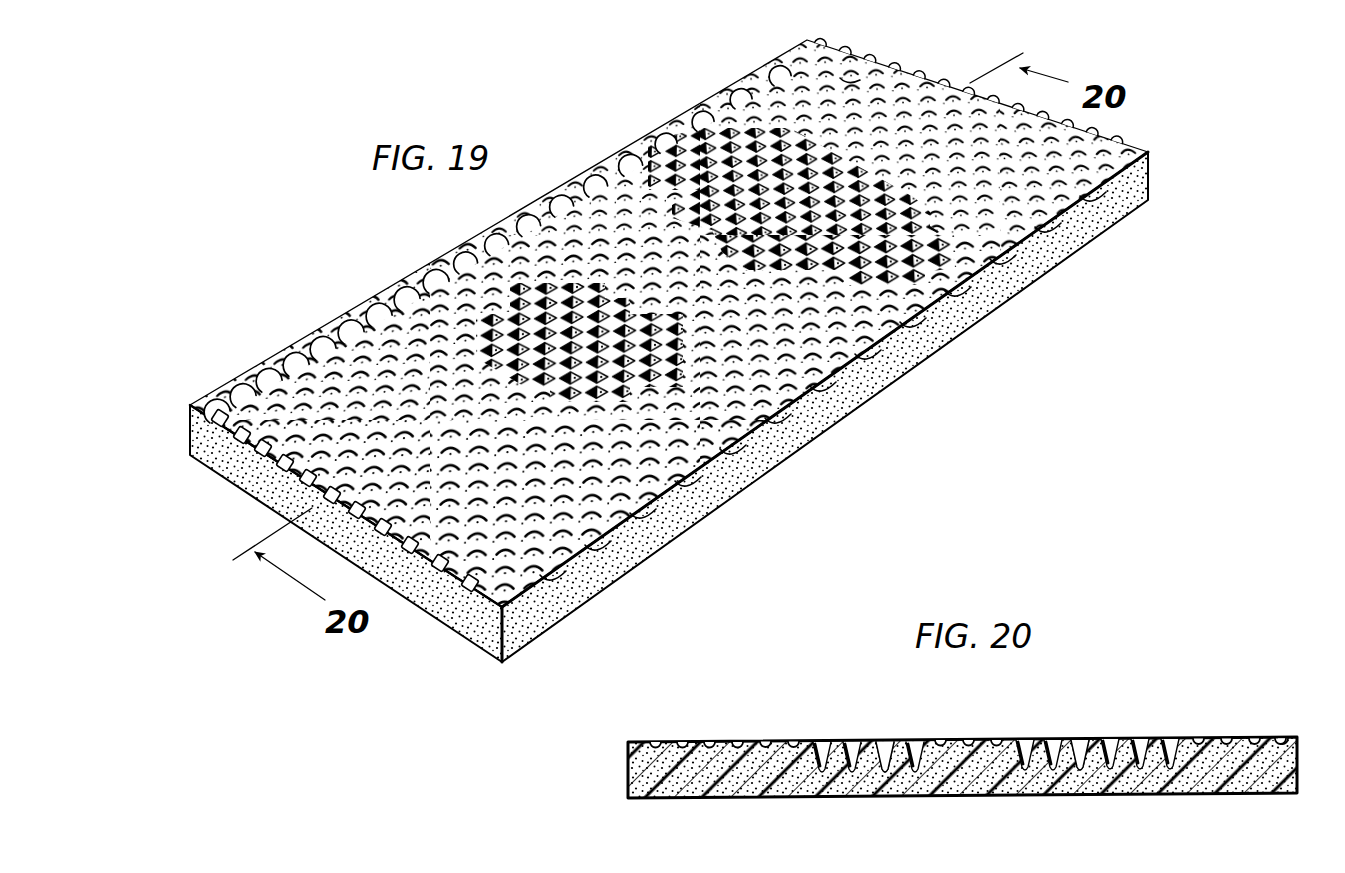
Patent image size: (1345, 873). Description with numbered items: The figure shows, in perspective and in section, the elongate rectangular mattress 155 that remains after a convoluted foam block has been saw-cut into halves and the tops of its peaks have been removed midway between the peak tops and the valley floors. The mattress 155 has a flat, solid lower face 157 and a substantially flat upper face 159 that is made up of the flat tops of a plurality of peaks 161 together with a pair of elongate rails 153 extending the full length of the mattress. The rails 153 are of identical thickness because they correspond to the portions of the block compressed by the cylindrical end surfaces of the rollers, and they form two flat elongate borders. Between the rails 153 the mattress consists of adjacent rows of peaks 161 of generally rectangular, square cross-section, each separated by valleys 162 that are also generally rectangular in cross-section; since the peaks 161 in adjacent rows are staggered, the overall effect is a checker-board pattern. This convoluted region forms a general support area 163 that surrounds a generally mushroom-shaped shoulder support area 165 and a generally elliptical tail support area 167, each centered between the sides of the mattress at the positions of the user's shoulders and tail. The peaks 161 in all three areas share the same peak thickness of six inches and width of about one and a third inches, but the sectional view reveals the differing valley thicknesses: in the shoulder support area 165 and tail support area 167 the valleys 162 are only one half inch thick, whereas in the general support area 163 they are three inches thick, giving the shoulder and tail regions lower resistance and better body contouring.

In FIG. 19, the elongate rail 153 is at (692, 117).
In FIG. 19, the elongate rectangular mattress 155 is at (600, 153).
In FIG. 19, the lower face 157 is at (665, 540).
In FIG. 20, the lower face 157 is at (1105, 794).
In FIG. 19, the upper face 159 is at (712, 382).
In FIG. 20, the upper face 159 is at (928, 743).
In FIG. 19, the peaks 161 is at (447, 290).
In FIG. 20, the peaks 161 is at (698, 742).
In FIG. 19, the valleys 162 is at (332, 365).
In FIG. 20, the valleys 162 is at (850, 740).
In FIG. 19, the general support area 163 is at (864, 84).
In FIG. 20, the general support area 163 is at (1265, 740).
In FIG. 19, the shoulder support area 165 is at (767, 152).
In FIG. 20, the shoulder support area 165 is at (1079, 740).
In FIG. 19, the tail support area 167 is at (533, 288).
In FIG. 20, the tail support area 167 is at (885, 740).